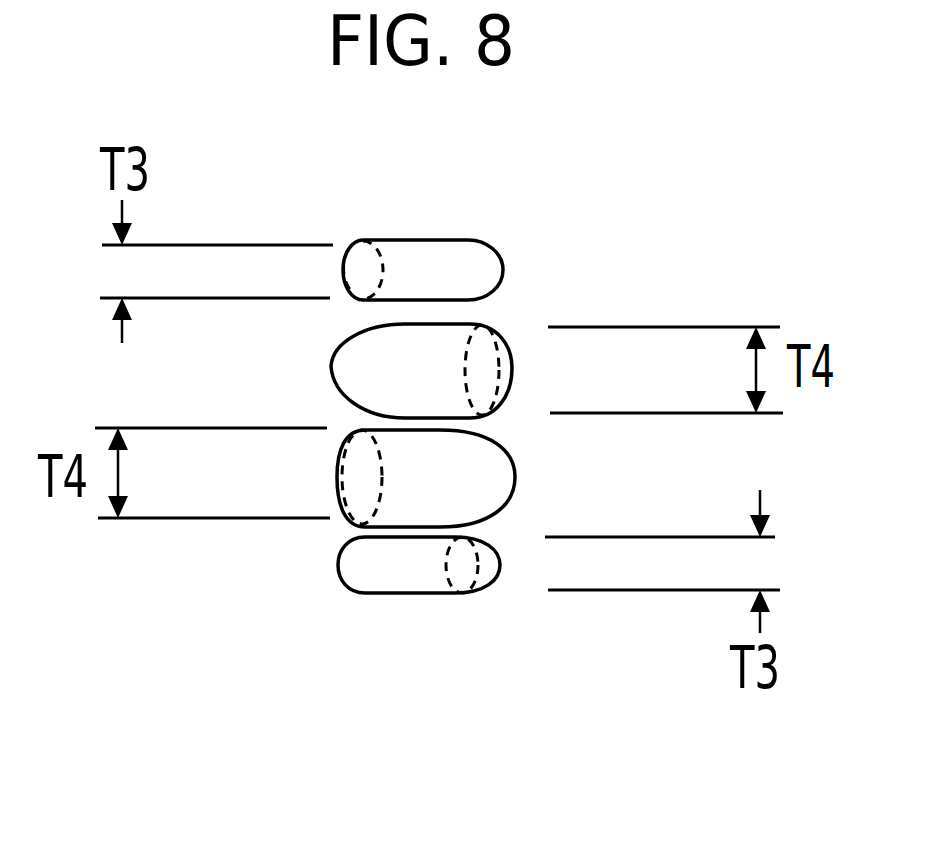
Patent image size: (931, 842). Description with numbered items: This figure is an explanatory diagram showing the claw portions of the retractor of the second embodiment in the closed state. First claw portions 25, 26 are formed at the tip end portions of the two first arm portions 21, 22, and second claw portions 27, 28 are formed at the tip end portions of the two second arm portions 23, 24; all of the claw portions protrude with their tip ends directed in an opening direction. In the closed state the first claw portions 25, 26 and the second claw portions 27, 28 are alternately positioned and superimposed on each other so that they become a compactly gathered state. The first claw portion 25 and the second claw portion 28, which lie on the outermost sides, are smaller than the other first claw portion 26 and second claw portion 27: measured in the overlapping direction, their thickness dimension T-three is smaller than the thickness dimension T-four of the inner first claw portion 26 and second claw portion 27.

The first arm portion 21 is at (353, 247).
The first arm portion 22 is at (340, 520).
The second arm portion 23 is at (500, 325).
The second arm portion 24 is at (468, 593).
The first claw portion 25 is at (460, 257).
The first claw portion 26 is at (490, 477).
The second claw portion 27 is at (360, 375).
The second claw portion 28 is at (385, 573).